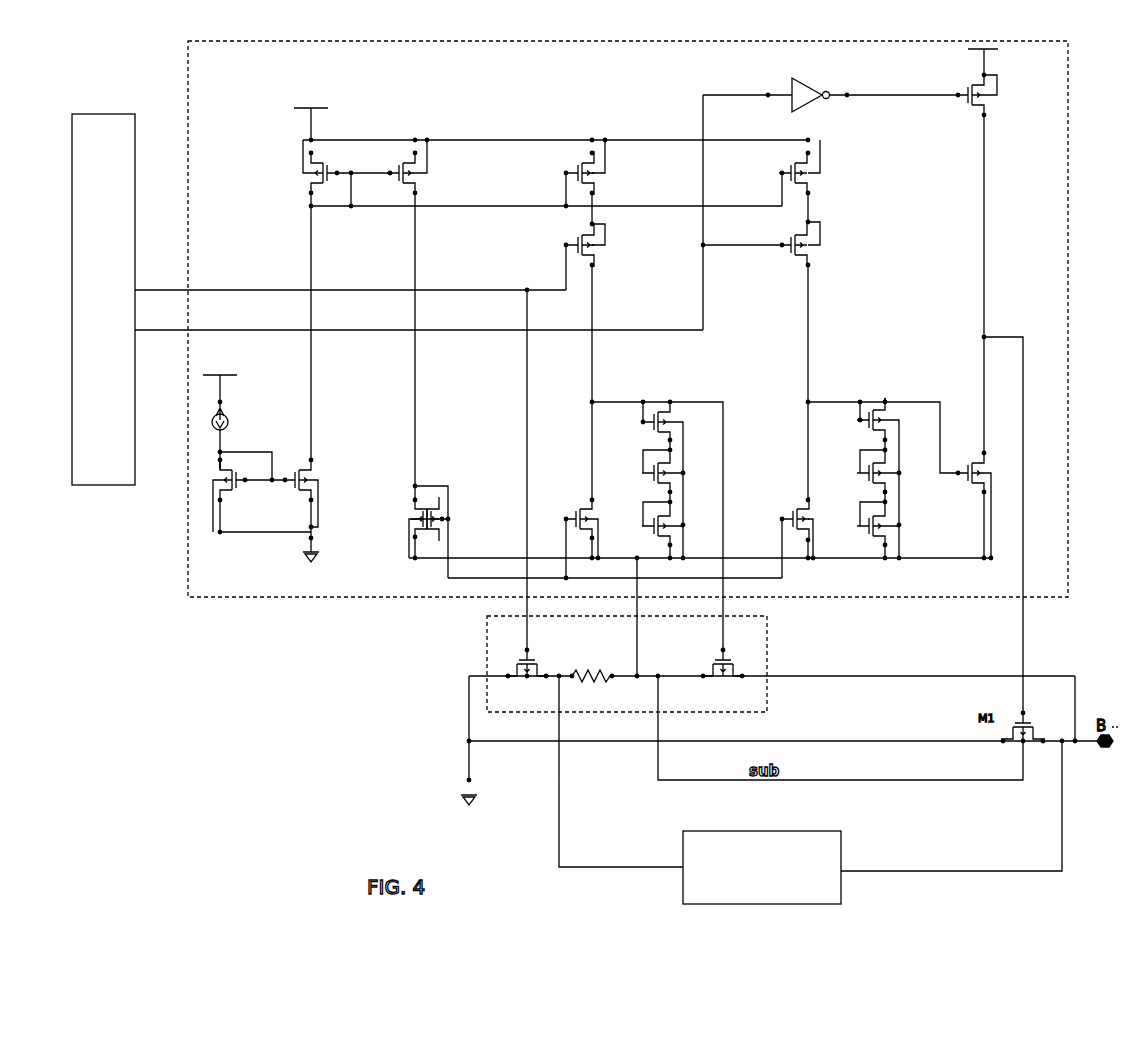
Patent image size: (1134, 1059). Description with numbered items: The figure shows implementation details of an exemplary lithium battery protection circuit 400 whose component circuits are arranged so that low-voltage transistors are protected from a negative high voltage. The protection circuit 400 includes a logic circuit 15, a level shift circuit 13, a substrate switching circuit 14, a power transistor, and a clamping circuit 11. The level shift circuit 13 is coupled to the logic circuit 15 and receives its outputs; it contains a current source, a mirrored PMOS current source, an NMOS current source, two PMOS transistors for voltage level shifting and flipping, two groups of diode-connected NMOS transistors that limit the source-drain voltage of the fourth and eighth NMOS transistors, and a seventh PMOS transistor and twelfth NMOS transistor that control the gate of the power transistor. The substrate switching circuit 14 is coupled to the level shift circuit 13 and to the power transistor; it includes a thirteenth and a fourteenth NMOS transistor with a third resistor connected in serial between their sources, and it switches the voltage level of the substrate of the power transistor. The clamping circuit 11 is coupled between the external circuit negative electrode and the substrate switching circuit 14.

The lithium battery protection circuit 400 is at (122, 61).
The logic circuit 15 is at (113, 472).
The level shift circuit 13 is at (267, 587).
The substrate switching circuit 14 is at (485, 630).
The clamping circuit 11 is at (845, 833).